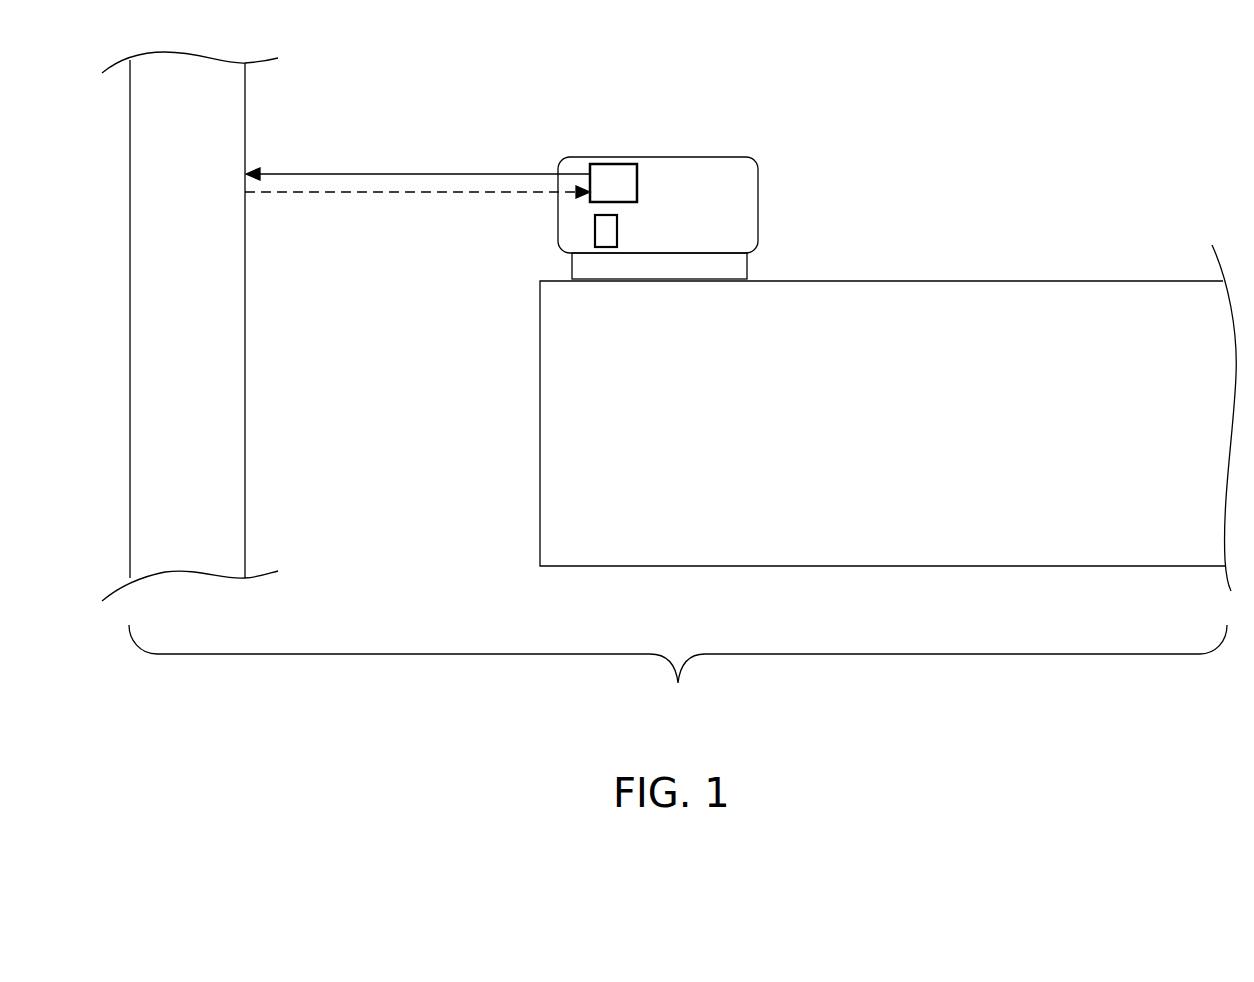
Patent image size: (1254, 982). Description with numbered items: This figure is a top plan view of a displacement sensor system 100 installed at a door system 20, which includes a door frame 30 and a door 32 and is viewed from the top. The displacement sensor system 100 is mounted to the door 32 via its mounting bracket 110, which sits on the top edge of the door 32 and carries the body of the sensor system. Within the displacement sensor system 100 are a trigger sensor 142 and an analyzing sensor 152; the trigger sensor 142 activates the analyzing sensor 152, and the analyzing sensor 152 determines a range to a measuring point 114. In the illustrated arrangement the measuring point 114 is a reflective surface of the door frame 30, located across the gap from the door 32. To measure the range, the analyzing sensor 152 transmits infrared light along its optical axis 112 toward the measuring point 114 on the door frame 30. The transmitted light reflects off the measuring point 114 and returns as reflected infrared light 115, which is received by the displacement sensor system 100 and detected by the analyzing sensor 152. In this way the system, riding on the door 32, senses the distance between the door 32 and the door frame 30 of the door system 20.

The door system 20 is at (678, 671).
The door frame 30 is at (225, 375).
The door 32 is at (557, 423).
The displacement sensor system 100 is at (569, 179).
The mounting bracket 110 is at (737, 265).
The optical axis 112 is at (417, 175).
The measuring point 114 is at (246, 322).
The reflected infrared light 115 is at (417, 193).
The trigger sensor 142 is at (604, 230).
The analyzing sensor 152 is at (608, 175).